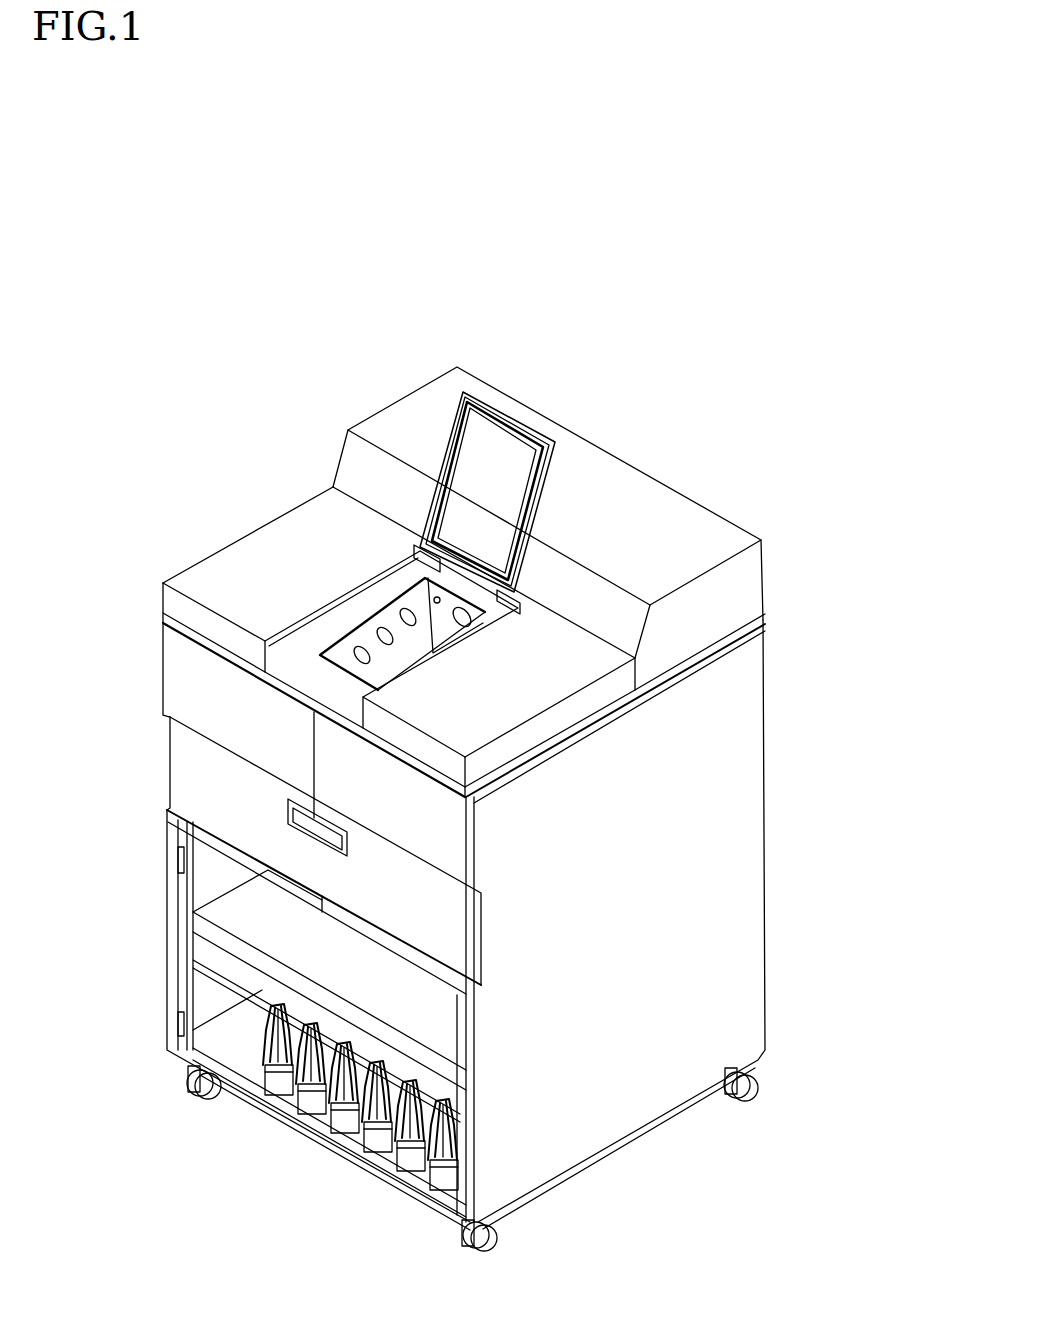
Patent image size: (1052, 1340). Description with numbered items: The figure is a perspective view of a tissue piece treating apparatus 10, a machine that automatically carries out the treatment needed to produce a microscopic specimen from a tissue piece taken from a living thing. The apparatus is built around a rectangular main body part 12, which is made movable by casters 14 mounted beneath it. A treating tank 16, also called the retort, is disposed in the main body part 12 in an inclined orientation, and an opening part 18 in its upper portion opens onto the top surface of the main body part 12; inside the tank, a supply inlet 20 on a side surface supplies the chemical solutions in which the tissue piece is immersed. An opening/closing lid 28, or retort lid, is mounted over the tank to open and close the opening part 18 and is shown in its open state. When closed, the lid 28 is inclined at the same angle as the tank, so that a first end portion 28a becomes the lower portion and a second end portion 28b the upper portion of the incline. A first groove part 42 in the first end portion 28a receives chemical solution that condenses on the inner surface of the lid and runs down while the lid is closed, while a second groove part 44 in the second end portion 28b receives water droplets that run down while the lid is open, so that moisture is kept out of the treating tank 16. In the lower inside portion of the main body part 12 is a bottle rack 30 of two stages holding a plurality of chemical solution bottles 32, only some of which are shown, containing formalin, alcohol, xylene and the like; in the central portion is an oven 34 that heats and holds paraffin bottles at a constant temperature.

The tissue piece treating apparatus 10 is at (680, 272).
The main body part 12 is at (683, 435).
The casters 14 is at (748, 1090).
The treating tank 16 is at (297, 693).
The opening part 18 is at (372, 668).
The supply inlet 20 is at (343, 622).
The opening/closing lid 28 is at (480, 471).
The first end portion 28a is at (503, 457).
The second end portion 28b is at (472, 543).
The bottle rack 30 is at (447, 1024).
The chemical solution bottles 32 is at (437, 1170).
The oven 34 is at (203, 788).
The first groove part 42 is at (480, 400).
The second groove part 44 is at (500, 560).